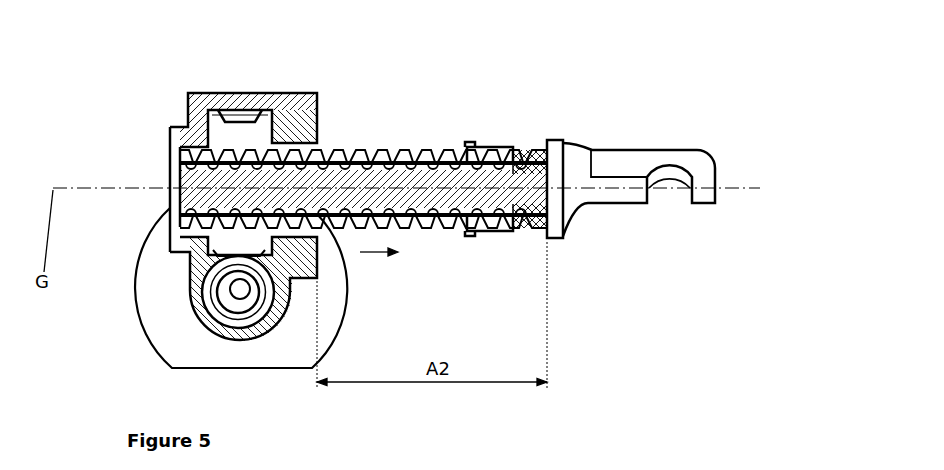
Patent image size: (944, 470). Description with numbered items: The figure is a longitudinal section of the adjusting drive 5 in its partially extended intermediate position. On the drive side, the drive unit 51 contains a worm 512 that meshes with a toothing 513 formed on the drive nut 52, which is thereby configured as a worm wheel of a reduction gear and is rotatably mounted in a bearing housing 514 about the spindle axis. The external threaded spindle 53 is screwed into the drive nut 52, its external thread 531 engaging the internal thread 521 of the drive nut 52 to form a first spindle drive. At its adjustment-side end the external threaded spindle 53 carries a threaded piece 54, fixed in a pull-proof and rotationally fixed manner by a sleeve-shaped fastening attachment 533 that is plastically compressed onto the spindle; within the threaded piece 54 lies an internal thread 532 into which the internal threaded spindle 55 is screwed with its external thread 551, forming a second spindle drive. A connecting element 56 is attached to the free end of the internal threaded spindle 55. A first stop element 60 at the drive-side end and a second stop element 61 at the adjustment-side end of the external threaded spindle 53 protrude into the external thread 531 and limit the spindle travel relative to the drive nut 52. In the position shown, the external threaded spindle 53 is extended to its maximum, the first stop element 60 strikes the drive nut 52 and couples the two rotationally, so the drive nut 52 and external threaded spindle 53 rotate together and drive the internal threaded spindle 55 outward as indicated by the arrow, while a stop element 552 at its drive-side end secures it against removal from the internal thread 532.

The adjusting drive 5 is at (683, 332).
The drive unit 51 is at (217, 356).
The worm 512 is at (245, 330).
The toothing 513 is at (247, 108).
The bearing housing 514 is at (203, 105).
The drive nut 52 is at (199, 251).
The internal thread 521 is at (224, 262).
The external threaded spindle 53 is at (336, 150).
The external thread 531 is at (377, 150).
The internal thread 532 is at (534, 140).
The fastening attachment 533 is at (487, 232).
The threaded piece 54 is at (527, 152).
The internal threaded spindle 55 is at (427, 150).
The external thread 551 is at (435, 228).
The stop element 552 is at (170, 212).
The connecting element 56 is at (607, 203).
The first stop element 60 is at (180, 150).
The second stop element 61 is at (468, 143).